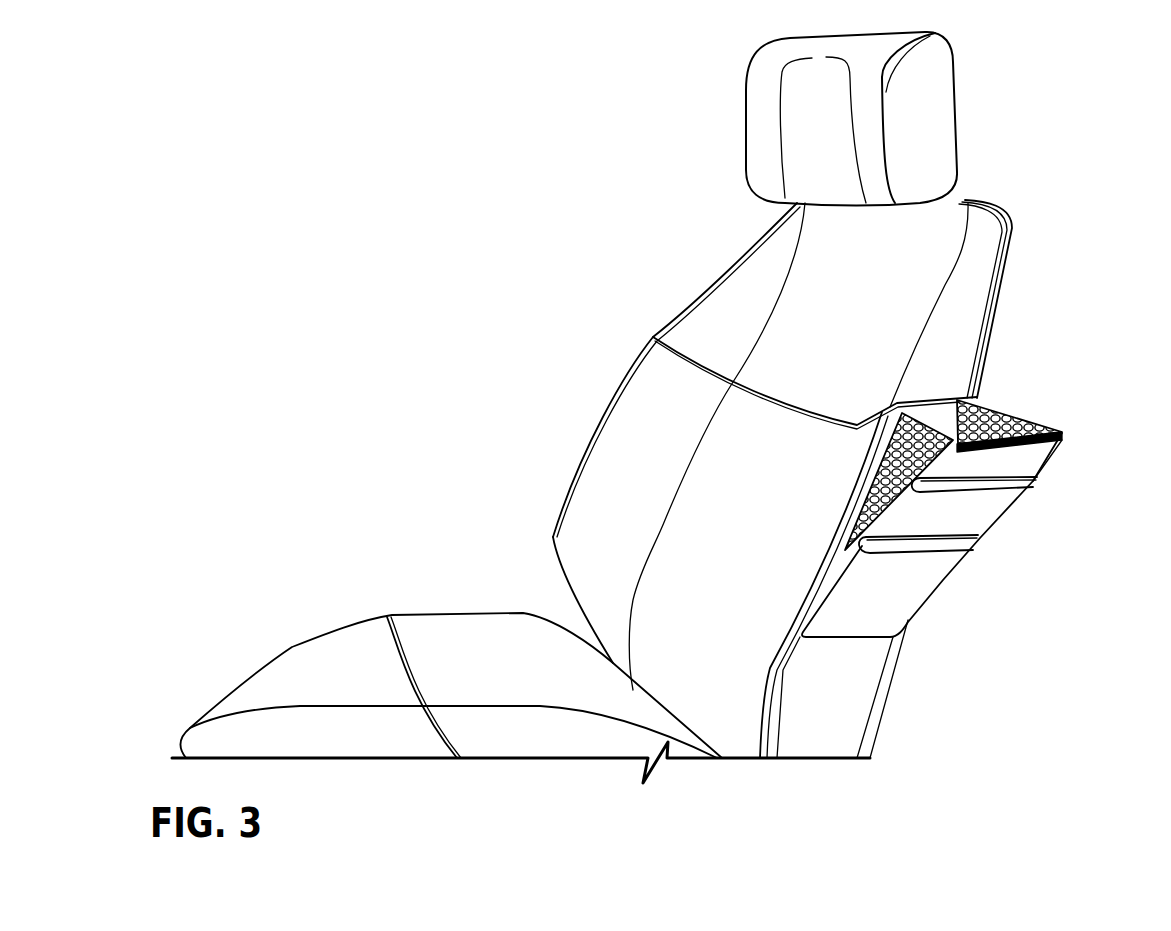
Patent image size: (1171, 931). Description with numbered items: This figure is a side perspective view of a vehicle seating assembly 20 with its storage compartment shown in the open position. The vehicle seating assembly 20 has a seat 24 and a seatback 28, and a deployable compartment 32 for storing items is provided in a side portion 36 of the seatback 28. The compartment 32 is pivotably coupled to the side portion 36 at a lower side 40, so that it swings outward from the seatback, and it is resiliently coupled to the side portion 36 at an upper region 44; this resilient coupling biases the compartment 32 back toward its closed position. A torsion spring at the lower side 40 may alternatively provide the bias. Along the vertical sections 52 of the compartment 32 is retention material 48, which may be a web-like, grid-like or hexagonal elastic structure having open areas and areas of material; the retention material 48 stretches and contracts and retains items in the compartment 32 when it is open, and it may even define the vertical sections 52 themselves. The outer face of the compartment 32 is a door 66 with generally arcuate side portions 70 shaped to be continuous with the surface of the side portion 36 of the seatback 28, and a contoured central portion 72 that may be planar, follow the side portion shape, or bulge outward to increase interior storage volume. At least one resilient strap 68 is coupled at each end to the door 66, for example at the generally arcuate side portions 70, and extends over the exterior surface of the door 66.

The vehicle seating assembly 20 is at (402, 306).
The seat 24 is at (453, 640).
The seatback 28 is at (803, 287).
The compartment 32 is at (908, 593).
The side portion 36 is at (963, 308).
The lower side 40 is at (833, 640).
The upper region 44 is at (930, 400).
The retention material 48 is at (1017, 423).
The vertical sections 52 is at (843, 473).
The door 66 is at (813, 645).
The resilient strap 68 is at (1012, 492).
The generally arcuate side portions 70 is at (1063, 433).
The contoured central portion 72 is at (1023, 462).